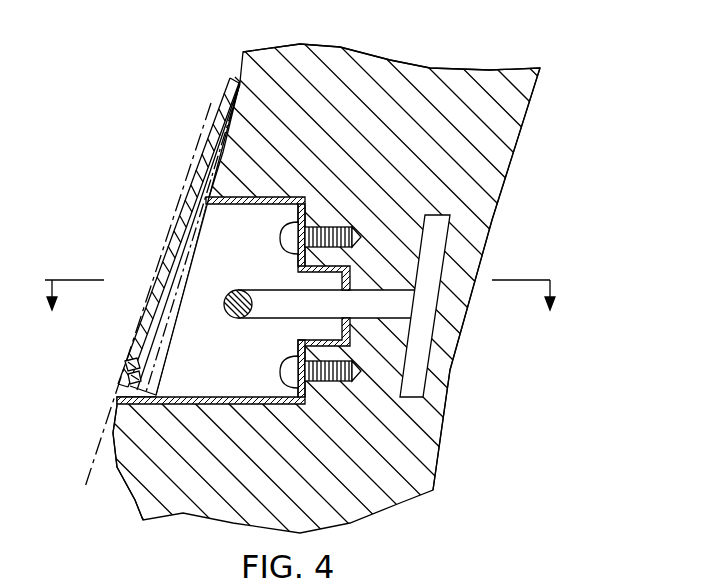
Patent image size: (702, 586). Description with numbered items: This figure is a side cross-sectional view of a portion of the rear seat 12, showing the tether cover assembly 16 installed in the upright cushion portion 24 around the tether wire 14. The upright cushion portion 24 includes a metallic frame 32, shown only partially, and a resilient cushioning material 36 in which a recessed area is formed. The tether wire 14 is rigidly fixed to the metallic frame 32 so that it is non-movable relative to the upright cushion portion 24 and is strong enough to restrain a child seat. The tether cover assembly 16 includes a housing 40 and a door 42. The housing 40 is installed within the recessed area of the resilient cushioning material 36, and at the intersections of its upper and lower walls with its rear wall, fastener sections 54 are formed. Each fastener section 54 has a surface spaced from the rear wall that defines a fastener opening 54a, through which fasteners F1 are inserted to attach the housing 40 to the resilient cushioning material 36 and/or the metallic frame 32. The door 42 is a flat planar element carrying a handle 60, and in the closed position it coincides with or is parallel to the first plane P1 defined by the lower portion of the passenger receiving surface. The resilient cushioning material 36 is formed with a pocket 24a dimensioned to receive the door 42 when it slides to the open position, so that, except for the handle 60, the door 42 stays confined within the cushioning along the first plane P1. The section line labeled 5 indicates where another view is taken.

The rear seat 12 is at (560, 132).
The tether wire 14 is at (380, 305).
The tether cover assembly 16 is at (289, 188).
The upright cushion portion 24 is at (447, 70).
The pocket 24a is at (214, 106).
The metallic frame 32 is at (437, 244).
The resilient cushioning material 36 is at (358, 98).
The housing 40 is at (207, 406).
The door 42 is at (185, 250).
The fastener sections 54 is at (270, 197).
The fastener opening 54a is at (331, 227).
The handle 60 is at (130, 360).
The section line 5- 5 is at (302, 311).
The fasteners F1 is at (287, 362).
The first plane P1 is at (92, 462).